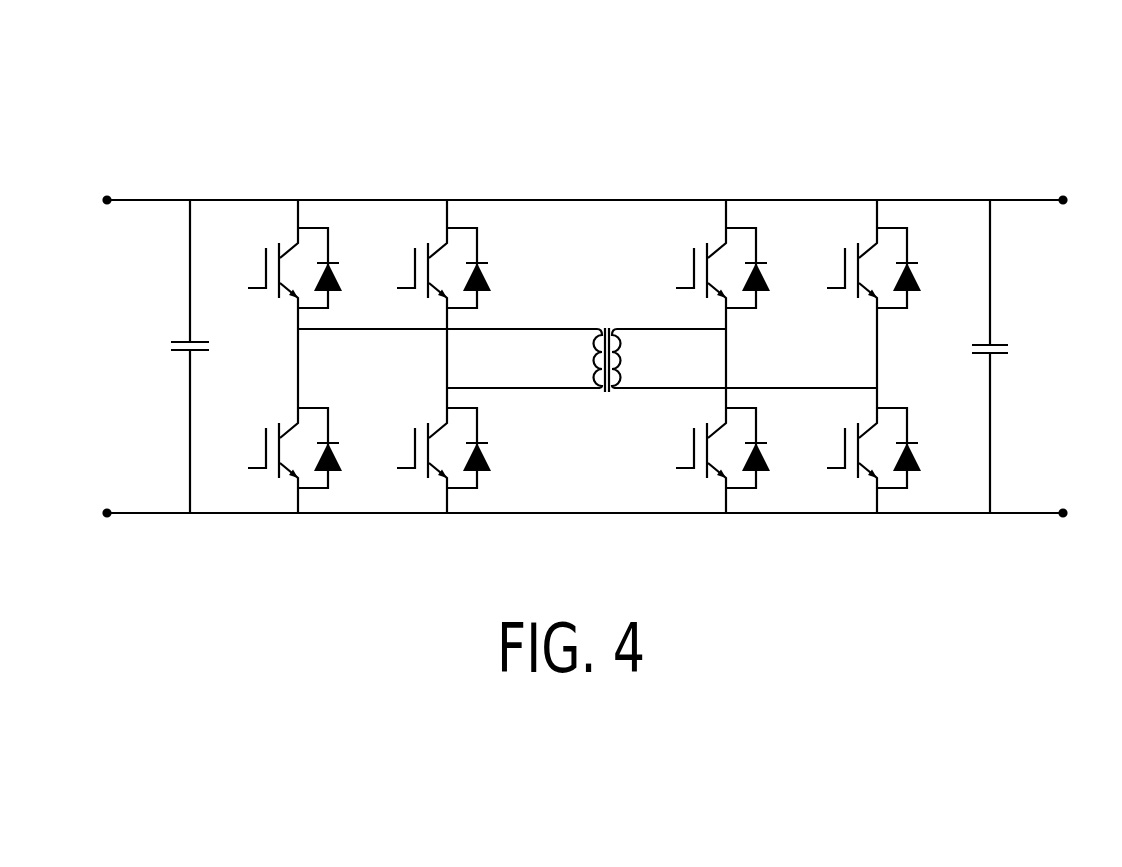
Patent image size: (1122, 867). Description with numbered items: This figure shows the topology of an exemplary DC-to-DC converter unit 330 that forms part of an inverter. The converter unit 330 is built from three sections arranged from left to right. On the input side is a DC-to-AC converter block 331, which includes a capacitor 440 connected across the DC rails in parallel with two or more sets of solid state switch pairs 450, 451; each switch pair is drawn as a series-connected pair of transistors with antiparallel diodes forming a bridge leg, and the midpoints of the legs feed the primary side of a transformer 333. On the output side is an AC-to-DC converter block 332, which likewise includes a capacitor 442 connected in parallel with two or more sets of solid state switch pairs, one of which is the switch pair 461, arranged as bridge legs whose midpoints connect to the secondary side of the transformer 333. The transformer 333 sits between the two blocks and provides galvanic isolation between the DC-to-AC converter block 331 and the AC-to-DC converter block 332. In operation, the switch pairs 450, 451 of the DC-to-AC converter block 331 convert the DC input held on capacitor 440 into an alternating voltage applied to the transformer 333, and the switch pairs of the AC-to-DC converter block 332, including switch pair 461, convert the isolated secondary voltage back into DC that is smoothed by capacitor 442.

The DC-to-DC converter unit 330 is at (443, 122).
The DC-to-AC converter block 331 is at (232, 426).
The AC-to-DC converter block 332 is at (955, 436).
The transformer 333 is at (605, 300).
The capacitor 440 is at (190, 340).
The capacitor 442 is at (1010, 350).
The solid state switch pair 450 is at (290, 296).
The solid state switch pair 451 is at (286, 428).
The solid state switch pair 461 is at (767, 472).